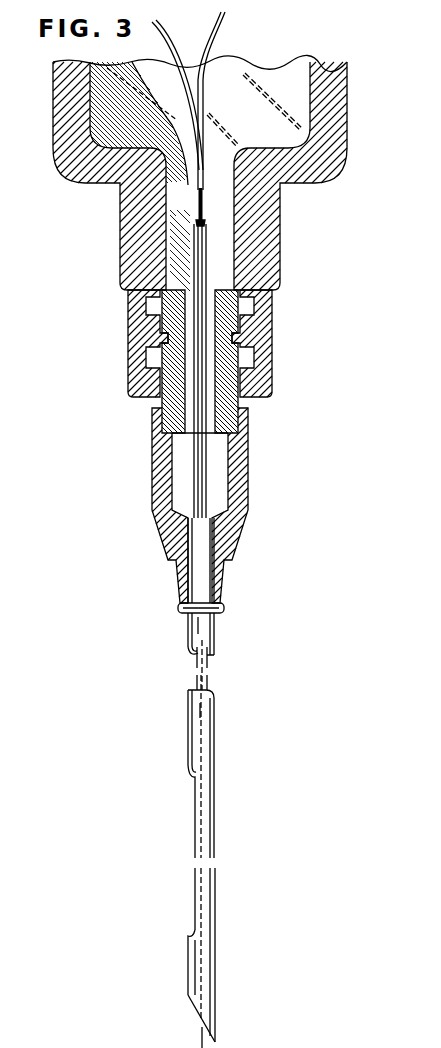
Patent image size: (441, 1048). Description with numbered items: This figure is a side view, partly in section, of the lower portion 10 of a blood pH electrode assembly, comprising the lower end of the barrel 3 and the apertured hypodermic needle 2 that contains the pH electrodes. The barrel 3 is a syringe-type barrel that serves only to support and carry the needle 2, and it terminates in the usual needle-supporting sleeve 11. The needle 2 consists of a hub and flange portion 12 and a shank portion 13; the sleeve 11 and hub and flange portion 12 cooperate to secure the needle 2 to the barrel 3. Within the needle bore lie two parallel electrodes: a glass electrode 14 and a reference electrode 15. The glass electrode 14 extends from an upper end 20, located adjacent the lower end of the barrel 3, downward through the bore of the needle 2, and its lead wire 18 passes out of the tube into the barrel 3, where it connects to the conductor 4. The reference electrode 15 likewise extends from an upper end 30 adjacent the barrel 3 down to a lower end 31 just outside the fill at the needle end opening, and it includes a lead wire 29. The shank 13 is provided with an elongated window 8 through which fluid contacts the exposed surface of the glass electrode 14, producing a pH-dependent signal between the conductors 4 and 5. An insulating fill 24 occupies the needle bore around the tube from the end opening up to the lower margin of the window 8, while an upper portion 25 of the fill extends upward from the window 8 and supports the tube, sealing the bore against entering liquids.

The lower portion of the assembly 10 is at (47, 121).
The barrel portion 3 is at (371, 107).
The lead wire 29 is at (165, 33).
The lead wire 18 is at (208, 40).
The upper end 20 is at (203, 224).
The upper end 30 is at (201, 228).
The glass electrode 14 is at (203, 226).
The reference electrode 15 is at (199, 254).
The needle-supporting sleeve 11 is at (135, 334).
The hypodermic needle 2 is at (270, 500).
The hub and flange portion 12 is at (180, 537).
The conductor 5 is at (190, 203).
The conductor 4 is at (190, 710).
The shank portion 13 is at (205, 745).
The upper portion of insulating fill 25 is at (190, 775).
The window 8 is at (195, 886).
The fill 24 is at (190, 930).
The lower end 31 is at (198, 1018).